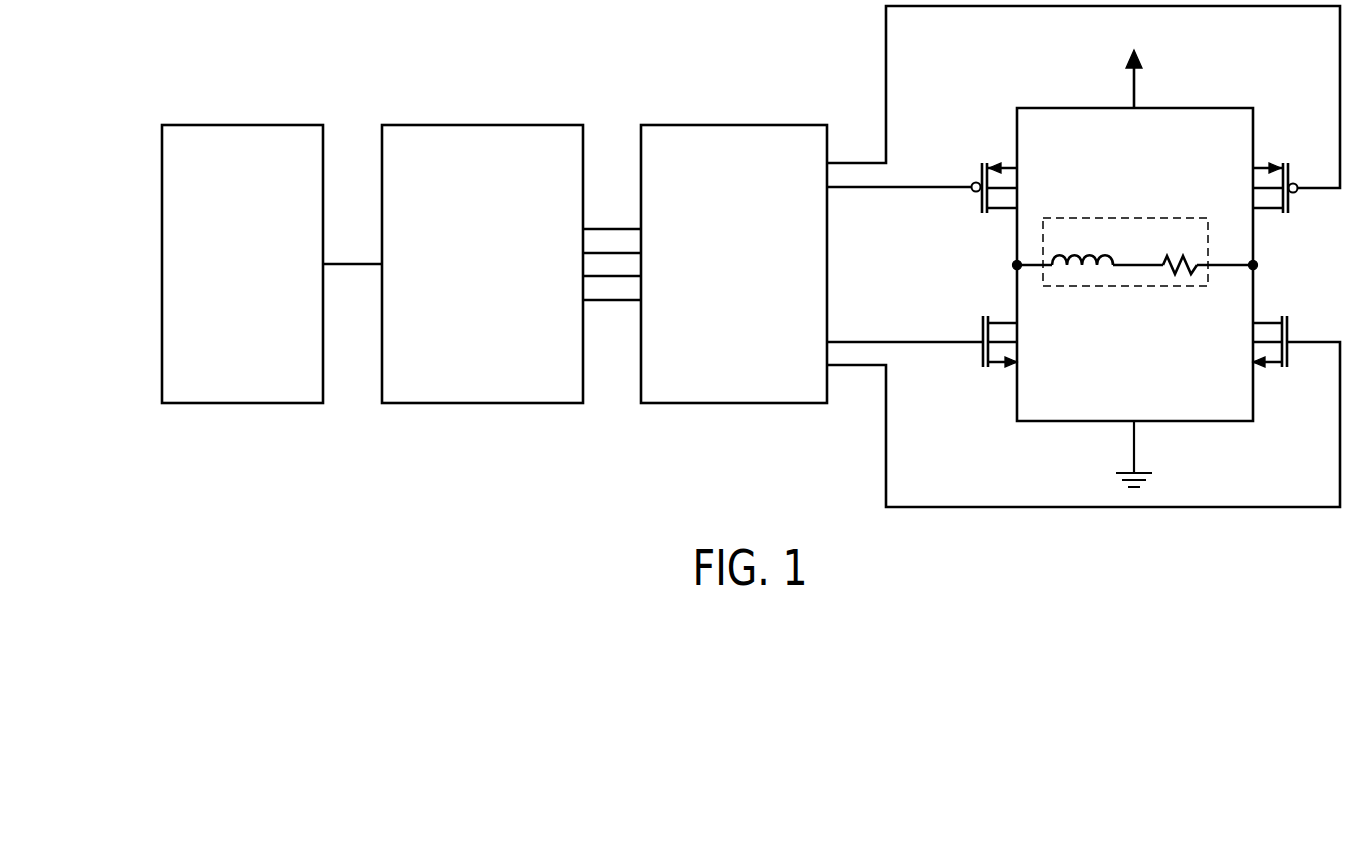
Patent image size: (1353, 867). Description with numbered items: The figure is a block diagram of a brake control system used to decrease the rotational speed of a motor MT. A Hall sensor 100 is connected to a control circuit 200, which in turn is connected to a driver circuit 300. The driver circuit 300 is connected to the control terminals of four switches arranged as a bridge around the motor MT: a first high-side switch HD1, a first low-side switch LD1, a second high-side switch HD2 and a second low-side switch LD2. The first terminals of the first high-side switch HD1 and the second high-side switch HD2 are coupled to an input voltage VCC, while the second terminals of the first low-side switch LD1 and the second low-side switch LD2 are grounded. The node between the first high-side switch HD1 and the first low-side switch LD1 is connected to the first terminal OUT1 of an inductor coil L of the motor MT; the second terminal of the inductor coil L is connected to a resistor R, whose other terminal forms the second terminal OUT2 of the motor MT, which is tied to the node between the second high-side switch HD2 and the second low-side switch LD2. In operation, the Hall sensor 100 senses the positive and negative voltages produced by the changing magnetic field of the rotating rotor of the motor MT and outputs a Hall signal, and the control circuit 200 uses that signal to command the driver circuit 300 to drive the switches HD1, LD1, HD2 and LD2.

The Hall sensor 100 is at (243, 125).
The control circuit 200 is at (483, 125).
The driver circuit 300 is at (735, 125).
The first high-side switch HD1 is at (985, 170).
The second high-side switch HD2 is at (1286, 170).
The first low-side switch LD1 is at (984, 361).
The second low-side switch LD2 is at (1284, 361).
The first terminal OUT1 is at (977, 267).
The second terminal OUT2 is at (1294, 267).
The motor MT is at (1135, 287).
The inductor coil L is at (1082, 244).
The resistor R is at (1180, 249).
The input voltage VCC is at (1134, 63).